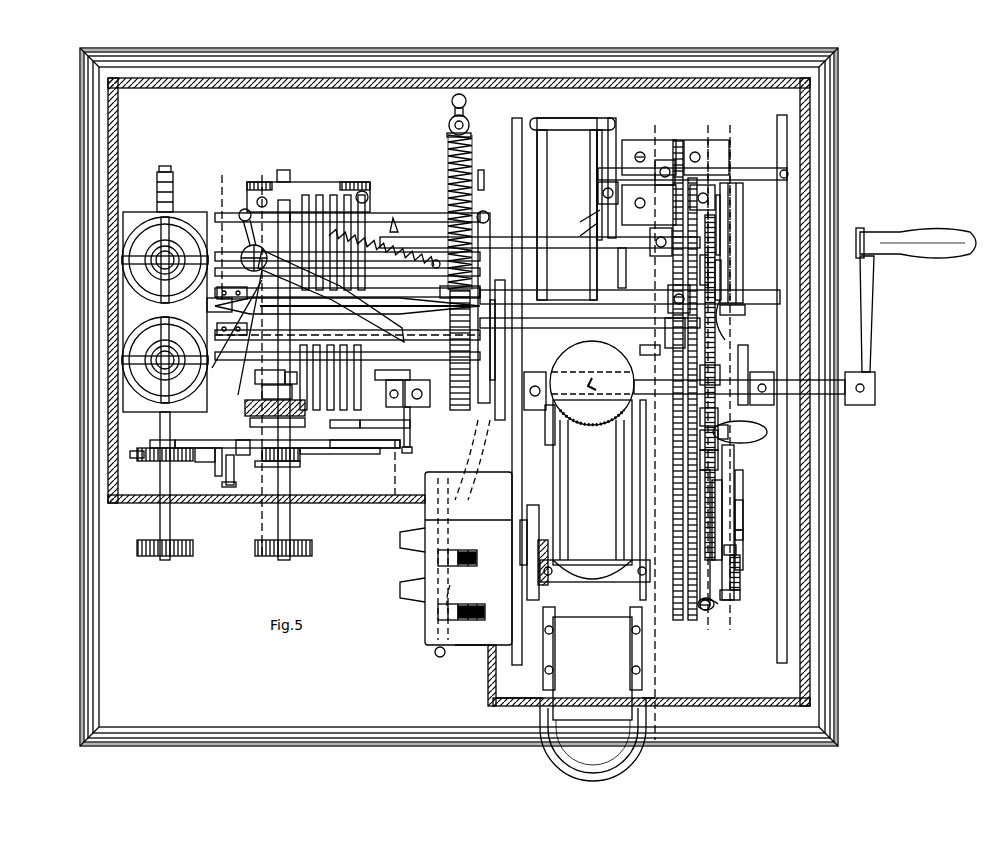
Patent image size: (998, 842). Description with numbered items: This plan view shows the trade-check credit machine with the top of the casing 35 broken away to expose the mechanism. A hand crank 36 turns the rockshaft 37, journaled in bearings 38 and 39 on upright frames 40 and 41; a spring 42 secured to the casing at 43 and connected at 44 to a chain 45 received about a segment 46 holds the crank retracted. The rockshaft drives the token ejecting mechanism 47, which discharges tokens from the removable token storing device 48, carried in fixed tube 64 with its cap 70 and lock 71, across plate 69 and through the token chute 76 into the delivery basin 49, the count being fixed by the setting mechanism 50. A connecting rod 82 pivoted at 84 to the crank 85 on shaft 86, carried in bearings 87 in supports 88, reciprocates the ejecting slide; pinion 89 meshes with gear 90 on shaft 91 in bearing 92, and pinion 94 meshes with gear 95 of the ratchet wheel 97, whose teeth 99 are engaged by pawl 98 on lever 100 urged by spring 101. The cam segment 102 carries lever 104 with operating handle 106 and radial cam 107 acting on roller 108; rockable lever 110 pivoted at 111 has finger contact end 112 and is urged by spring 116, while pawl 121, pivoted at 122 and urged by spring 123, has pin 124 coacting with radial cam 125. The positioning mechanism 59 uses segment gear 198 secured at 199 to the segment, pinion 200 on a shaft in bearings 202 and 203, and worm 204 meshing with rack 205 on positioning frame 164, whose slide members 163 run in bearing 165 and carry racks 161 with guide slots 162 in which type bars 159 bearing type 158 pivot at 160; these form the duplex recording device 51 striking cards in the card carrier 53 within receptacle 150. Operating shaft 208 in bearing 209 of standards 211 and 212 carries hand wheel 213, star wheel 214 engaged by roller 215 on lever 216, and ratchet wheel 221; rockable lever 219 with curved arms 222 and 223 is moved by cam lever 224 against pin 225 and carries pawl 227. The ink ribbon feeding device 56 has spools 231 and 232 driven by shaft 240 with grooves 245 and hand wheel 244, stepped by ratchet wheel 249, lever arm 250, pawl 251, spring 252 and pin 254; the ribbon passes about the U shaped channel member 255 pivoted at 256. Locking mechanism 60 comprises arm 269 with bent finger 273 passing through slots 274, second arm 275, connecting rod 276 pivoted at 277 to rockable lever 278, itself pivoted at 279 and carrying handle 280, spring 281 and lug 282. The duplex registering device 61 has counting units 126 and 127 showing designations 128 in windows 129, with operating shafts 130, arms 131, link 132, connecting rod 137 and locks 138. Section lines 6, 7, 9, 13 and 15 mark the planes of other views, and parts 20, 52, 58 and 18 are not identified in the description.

The casing 35 is at (822, 432).
The bearing 38 is at (810, 345).
The spool 232 is at (160, 215).
The spool 231 is at (165, 318).
The annular V shaped grooves 245 is at (157, 190).
The horizontal shaft 240 is at (171, 512).
The operating hand wheel 244 is at (178, 540).
The lever arm 250 is at (158, 452).
The ratchet wheel 249 is at (140, 462).
The ink ribbon feeding device 56 is at (151, 431).
The bar 20 is at (212, 428).
The curved arm 223 is at (215, 440).
The pawl 251 is at (201, 466).
The spring 252 is at (228, 465).
The pin 254 is at (226, 485).
The rockable lever 219 is at (238, 450).
The gear 58 is at (290, 462).
The ratchet wheel 221 is at (292, 470).
The operating shaft 208 is at (291, 512).
The knurled hand wheel 213 is at (298, 540).
The standard 212 is at (345, 450).
The pin 225 is at (356, 450).
The pawl 227 is at (385, 451).
The cam lever 224 is at (418, 412).
The curved arm 222 is at (412, 445).
The type bars 159 is at (372, 375).
The racks 161 is at (372, 358).
The roller 215 is at (245, 408).
The lever 216 is at (250, 424).
The star wheel 214 is at (268, 398).
The recording device 51 is at (260, 378).
The pin 52 is at (274, 373).
The card carrier 53 is at (236, 326).
The slots 274 is at (248, 332).
The pivot 256 is at (207, 306).
The arm 269 is at (238, 210).
The second arm 275 is at (245, 225).
The bearing 209 is at (288, 176).
The standard 211 is at (322, 184).
The imprinting type 158 is at (400, 205).
The connecting rod 276 is at (430, 210).
The locking mechanism 60 is at (372, 213).
The guide slots 162 is at (395, 236).
The spring 281 is at (392, 242).
The pivot 160 is at (360, 256).
The U shaped channel member 255 is at (352, 298).
The receptacle 150 is at (392, 298).
The bent finger 273 is at (322, 306).
The rod 18 is at (400, 328).
The spring anchorage 43 is at (450, 112).
The upright frame 41 is at (512, 125).
The spring 42 is at (448, 162).
The pivotal connection 277 is at (487, 172).
The rockable lever 278 is at (492, 250).
The bearing 92 is at (490, 262).
The segment 46 is at (458, 372).
The spring connection 44 is at (495, 350).
The chain 45 is at (499, 340).
The bearing 39 is at (520, 390).
The pivot 279 is at (490, 440).
The connecting rod 137 is at (572, 209).
The token ejecting mechanism 47 is at (590, 186).
The connecting rod 82 is at (595, 201).
The lug 282 is at (574, 214).
The bearing 165 is at (573, 227).
The slide members 163 is at (538, 254).
The pivotal connection 84 is at (610, 115).
The crank 85 is at (612, 125).
The upstanding supports 88 is at (612, 142).
The rotatable shaft 86 is at (655, 150).
The bearings 87 is at (608, 200).
The pinion 89 is at (678, 138).
The gear 90 is at (688, 272).
The positioning frame 164 is at (640, 332).
The rotatable shaft 91 is at (618, 250).
The rack 205 is at (630, 299).
The positioning mechanism 59 is at (626, 323).
The pinion 200 is at (671, 335).
The cap 70 is at (646, 353).
The segment gear 198 is at (700, 375).
The securing point 199 is at (700, 418).
The finger contact end 112 is at (700, 444).
The fixed tube 64 is at (698, 460).
The rockable lever 110 is at (700, 486).
The pivot 111 is at (700, 500).
The spring 101 is at (732, 195).
The lever 100 is at (736, 213).
The pawl 98 is at (736, 230).
The roller 108 is at (736, 248).
The pinion 94 is at (738, 268).
The radial cam 107 is at (736, 284).
The gear 95 is at (740, 320).
The cam segment 102 is at (735, 345).
The operating handle 106 is at (746, 427).
The lever 104 is at (740, 456).
The teeth 99 is at (738, 477).
The ratchet wheel 97 is at (740, 500).
The radial cam 125 is at (744, 520).
The pin 124 is at (738, 545).
The pawl 121 is at (736, 548).
The pivot 122 is at (738, 572).
The spring 123 is at (740, 587).
The spring 116 is at (715, 606).
The upright frame 40 is at (780, 116).
The setting mechanism 50 is at (712, 122).
The section line 6 is at (708, 135).
The section line 7 is at (730, 135).
The section line 9 is at (655, 122).
The plate 69 is at (640, 586).
The worm 204 is at (592, 383).
The lock 71 is at (602, 376).
The bearing 203 is at (555, 418).
The token storing device 48 is at (595, 491).
The arms 131 is at (548, 480).
The link 132 is at (560, 500).
The token chute 76 is at (632, 660).
The delivery basin 49 is at (540, 754).
The locks 138 is at (400, 598).
The counting unit 126 is at (461, 551).
The numerical character designations 128 is at (478, 558).
The windows 129 is at (467, 590).
The counting unit 127 is at (461, 604).
The operating shafts 130 is at (490, 622).
The operating handle 280 is at (434, 653).
The duplex registering device 61 is at (465, 648).
The section line 13 is at (222, 172).
The section line 15 is at (262, 172).
The rockshaft 37 is at (850, 408).
The bearing 202 is at (874, 326).
The hand crank 36 is at (875, 312).